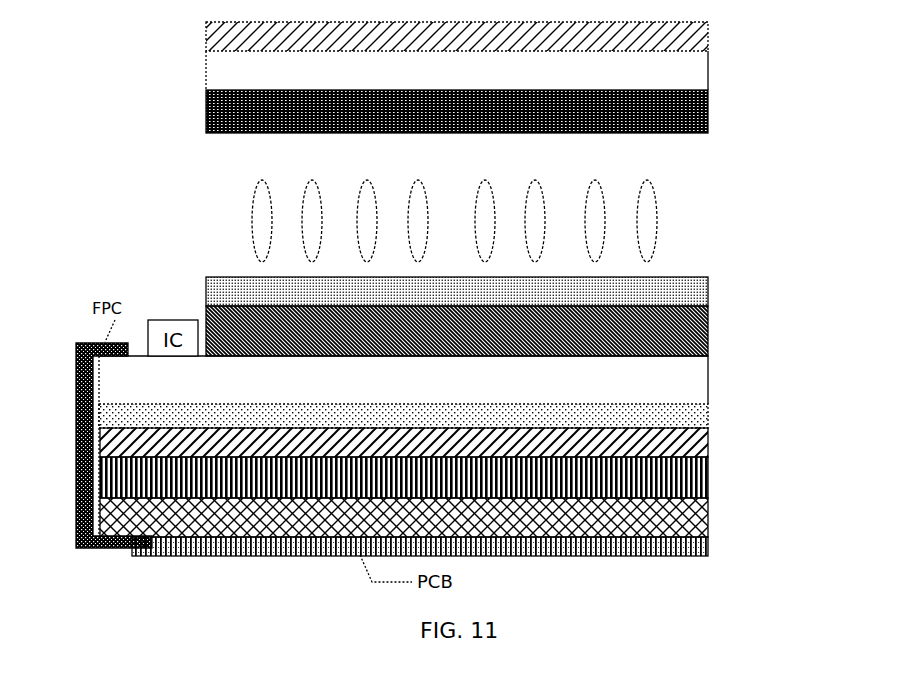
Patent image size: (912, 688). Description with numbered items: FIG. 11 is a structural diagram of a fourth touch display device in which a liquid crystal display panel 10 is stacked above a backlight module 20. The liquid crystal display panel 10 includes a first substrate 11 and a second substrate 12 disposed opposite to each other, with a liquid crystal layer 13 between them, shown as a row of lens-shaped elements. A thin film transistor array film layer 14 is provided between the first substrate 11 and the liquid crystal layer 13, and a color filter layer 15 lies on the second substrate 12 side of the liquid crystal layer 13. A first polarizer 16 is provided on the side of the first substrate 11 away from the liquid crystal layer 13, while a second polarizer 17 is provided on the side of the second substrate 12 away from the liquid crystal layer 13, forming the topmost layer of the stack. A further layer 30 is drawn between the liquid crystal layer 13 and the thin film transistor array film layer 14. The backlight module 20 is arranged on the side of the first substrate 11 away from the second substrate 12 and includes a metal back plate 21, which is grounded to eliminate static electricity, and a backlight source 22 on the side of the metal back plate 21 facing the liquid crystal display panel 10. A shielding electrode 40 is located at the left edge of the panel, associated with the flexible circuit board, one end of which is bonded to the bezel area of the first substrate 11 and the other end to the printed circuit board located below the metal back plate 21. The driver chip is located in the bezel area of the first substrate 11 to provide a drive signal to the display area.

The liquid crystal display panel 10 is at (487, 279).
The first substrate 11 is at (692, 384).
The second substrate 12 is at (668, 70).
The liquid crystal layer 13 is at (650, 214).
The thin film transistor array film layer 14 is at (668, 333).
The color filter layer 15 is at (668, 113).
The first polarizer 16 is at (438, 442).
The second polarizer 17 is at (668, 38).
The backlight module 20 is at (474, 497).
The metal back plate 21 is at (436, 517).
The backlight source 22 is at (693, 482).
The adhesive layer 30 is at (235, 295).
The shielding electrode 40 is at (125, 420).